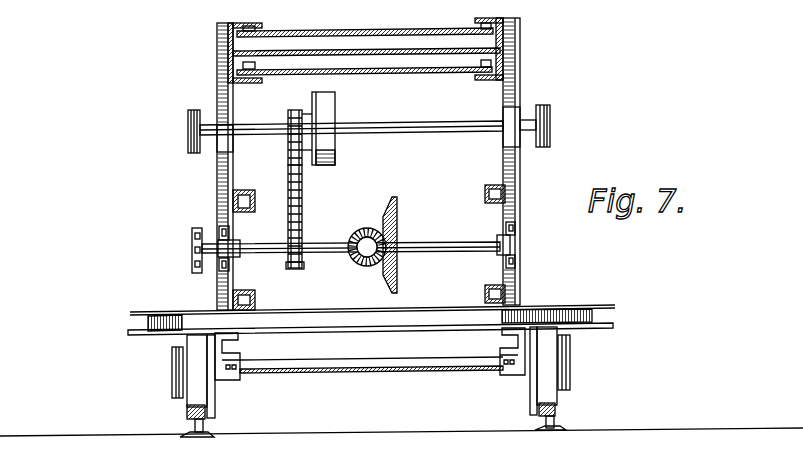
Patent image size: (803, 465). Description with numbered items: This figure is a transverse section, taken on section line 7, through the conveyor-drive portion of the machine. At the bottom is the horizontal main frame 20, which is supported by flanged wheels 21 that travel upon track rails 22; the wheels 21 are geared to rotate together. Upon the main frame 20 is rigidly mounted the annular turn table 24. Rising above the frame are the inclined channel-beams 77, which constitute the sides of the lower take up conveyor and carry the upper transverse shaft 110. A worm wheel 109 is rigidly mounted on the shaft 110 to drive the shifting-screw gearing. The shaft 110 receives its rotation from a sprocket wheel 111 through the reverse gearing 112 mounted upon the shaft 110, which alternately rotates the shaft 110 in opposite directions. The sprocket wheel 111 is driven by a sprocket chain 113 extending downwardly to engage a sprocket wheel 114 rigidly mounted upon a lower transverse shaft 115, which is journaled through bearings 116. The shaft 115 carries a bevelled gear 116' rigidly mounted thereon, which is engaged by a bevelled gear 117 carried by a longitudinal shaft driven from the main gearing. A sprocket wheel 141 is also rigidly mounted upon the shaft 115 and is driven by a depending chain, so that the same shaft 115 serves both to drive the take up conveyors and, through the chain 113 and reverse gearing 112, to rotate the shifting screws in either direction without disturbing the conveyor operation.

The section line 7 is at (486, 80).
The main frame 20 is at (240, 352).
The wheels 21 is at (383, 366).
The track rails 22 is at (187, 412).
The annular turn table 24 is at (604, 300).
The inclined channel-beams 77 is at (520, 63).
The worm wheel 109 is at (550, 130).
The transverse shaft 110 is at (405, 122).
The sprocket wheel 111 is at (288, 116).
The reverse gearing 112 is at (336, 153).
The sprocket chain 113 is at (303, 221).
The sprocket wheel 114 is at (300, 268).
The transverse shaft 115 is at (437, 243).
The bearings 116 is at (531, 243).
The bevelled gear 116' is at (414, 245).
The bevelled gear 117 is at (366, 268).
The sprocket wheel 141 is at (192, 232).